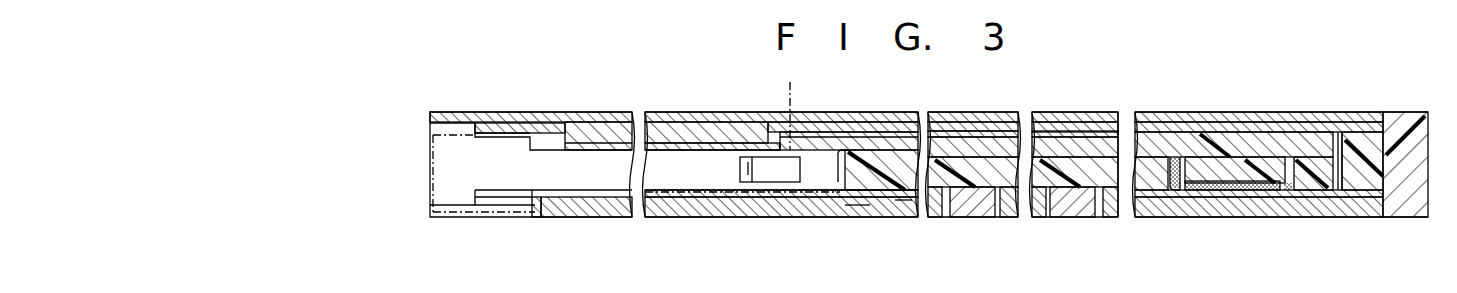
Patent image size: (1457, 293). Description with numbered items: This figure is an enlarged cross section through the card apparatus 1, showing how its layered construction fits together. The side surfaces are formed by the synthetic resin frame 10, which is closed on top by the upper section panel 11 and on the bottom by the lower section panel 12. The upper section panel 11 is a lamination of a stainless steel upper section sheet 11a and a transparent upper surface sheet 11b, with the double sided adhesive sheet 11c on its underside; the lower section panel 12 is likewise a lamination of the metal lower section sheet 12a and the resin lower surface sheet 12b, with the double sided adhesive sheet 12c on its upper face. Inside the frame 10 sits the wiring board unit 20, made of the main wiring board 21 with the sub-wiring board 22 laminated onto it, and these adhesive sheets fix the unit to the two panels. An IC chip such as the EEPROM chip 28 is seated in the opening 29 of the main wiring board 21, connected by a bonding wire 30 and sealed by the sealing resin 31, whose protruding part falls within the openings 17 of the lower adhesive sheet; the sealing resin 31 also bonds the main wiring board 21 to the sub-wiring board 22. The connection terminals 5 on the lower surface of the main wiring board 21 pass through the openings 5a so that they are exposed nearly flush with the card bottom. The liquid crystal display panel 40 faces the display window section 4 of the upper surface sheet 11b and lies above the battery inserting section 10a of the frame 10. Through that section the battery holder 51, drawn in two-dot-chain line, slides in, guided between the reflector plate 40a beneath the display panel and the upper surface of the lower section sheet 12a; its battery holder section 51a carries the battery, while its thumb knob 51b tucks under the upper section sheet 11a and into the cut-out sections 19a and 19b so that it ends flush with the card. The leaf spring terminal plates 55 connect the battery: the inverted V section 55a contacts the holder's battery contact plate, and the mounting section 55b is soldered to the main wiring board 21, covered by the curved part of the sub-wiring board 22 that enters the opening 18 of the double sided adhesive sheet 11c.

The card apparatus 1 is at (1321, 112).
The display window section 4 is at (709, 110).
The connection terminals 5 is at (984, 208).
The openings 5a is at (942, 204).
The frame 10 is at (1416, 174).
The battery inserting section 10a is at (442, 182).
The upper section panel 11 is at (1107, 112).
The upper section sheet 11a is at (1060, 126).
The upper surface sheet 11b is at (1090, 116).
The double sided adhesive sheet 11c is at (997, 128).
The lower section panel 12 is at (789, 220).
The lower section sheet 12a is at (861, 208).
The lower surface sheet 12b is at (832, 202).
The double sided adhesive sheet 12c is at (904, 200).
The openings 17 is at (1314, 186).
The opening 18 is at (878, 134).
The cut-out section 19a is at (528, 208).
The cut-out section 19b is at (540, 216).
The wiring board unit 20 is at (1383, 186).
The main wiring board 21 is at (1350, 172).
The sub-wiring board 22 is at (1225, 146).
The EEPROM chip 28 is at (1252, 176).
The opening 29 is at (1174, 186).
The bonding wire 30 is at (1200, 192).
The sealing resin 31 is at (1220, 210).
The liquid crystal display panel 40 is at (670, 130).
The reflector plate 40a is at (595, 140).
The battery holder 51 is at (721, 103).
The battery holder section 51a is at (672, 196).
The thumb knob 51b is at (493, 206).
The terminal plates 55 is at (820, 164).
The inverted V section 55a is at (763, 178).
The mounting section 55b is at (844, 150).